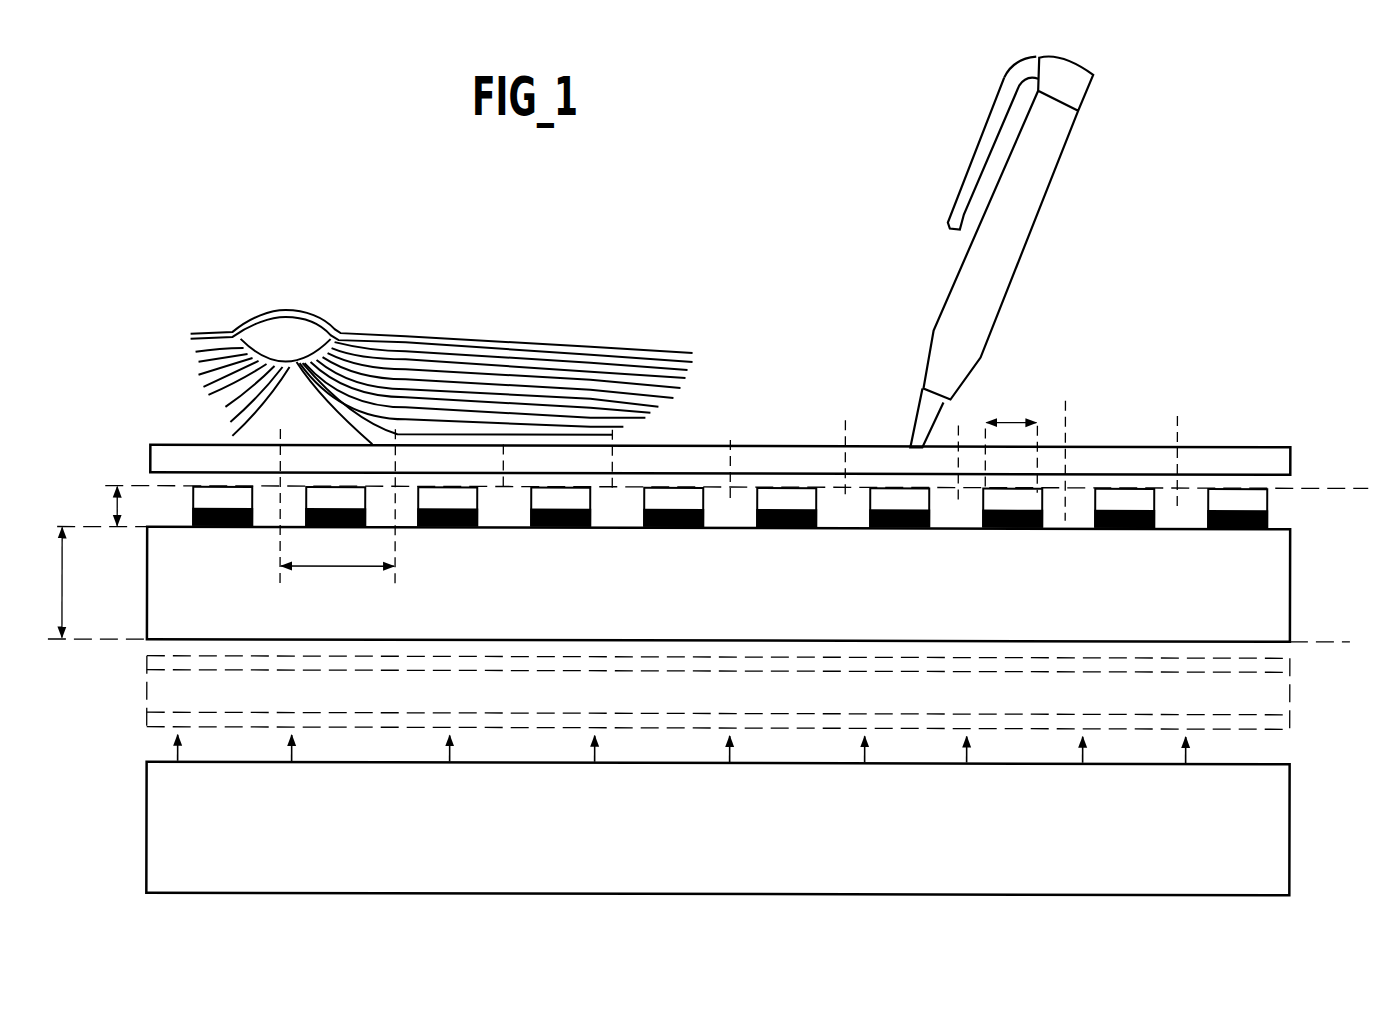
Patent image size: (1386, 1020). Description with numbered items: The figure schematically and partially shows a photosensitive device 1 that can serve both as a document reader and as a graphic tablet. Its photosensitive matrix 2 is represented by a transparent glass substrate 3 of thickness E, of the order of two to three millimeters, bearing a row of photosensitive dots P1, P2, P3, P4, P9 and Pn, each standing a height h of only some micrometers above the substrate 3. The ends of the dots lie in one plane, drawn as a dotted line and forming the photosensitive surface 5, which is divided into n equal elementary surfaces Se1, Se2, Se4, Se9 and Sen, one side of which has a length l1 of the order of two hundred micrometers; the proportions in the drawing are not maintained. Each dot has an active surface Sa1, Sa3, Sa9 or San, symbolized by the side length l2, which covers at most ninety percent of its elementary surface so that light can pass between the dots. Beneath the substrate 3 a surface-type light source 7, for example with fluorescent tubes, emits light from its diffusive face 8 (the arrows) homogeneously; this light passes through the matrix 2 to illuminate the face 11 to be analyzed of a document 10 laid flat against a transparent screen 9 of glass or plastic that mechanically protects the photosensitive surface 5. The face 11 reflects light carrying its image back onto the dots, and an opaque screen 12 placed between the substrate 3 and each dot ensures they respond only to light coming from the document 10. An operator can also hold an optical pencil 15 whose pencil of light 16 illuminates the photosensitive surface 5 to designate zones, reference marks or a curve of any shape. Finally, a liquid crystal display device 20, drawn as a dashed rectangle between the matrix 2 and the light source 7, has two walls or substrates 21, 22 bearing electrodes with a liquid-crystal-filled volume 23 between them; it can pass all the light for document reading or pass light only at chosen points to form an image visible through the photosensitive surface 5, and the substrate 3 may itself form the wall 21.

The photosensitive device 1 is at (1222, 272).
The photosensitive matrix 2 is at (1350, 487).
The substrate 3 is at (147, 600).
The photosensitive surface 5 is at (1330, 486).
The light source 7 is at (147, 843).
The face 8 is at (150, 762).
The transparent screen 9 is at (1292, 458).
The document 10 is at (572, 313).
The face to be analyzed 11 is at (333, 434).
The opaque screen 12 is at (222, 528).
The optical pencil 15 is at (1053, 182).
The pencil of light 16 is at (918, 413).
The liquid crystal display device 20 is at (1355, 658).
The wall or substrate 21 is at (1292, 660).
The wall or substrate 22 is at (1291, 727).
The volume 23 is at (1288, 696).
The elementary surface Se1 is at (183, 445).
The active surface Sa1 is at (206, 487).
The elementary surface Se2 is at (294, 445).
The active surface Sa3 is at (458, 487).
The elementary surface Se4 is at (578, 487).
The elementary surface Se9 is at (1144, 445).
The active surface Sa9 is at (1115, 487).
The active surface San is at (1230, 487).
The elementary surface Sen is at (1266, 445).
The photosensitive dot P1 is at (178, 508).
The photosensitive dot P2 is at (298, 506).
The photosensitive dot P3 is at (486, 512).
The photosensitive dot P4 is at (598, 512).
The photosensitive dot P9 is at (1164, 509).
The photosensitive dot Pn is at (1323, 507).
The length of side of elementary surface l1 is at (338, 568).
The length of side of active surface l2 is at (1011, 445).
The thickness E is at (80, 592).
The height h is at (112, 506).